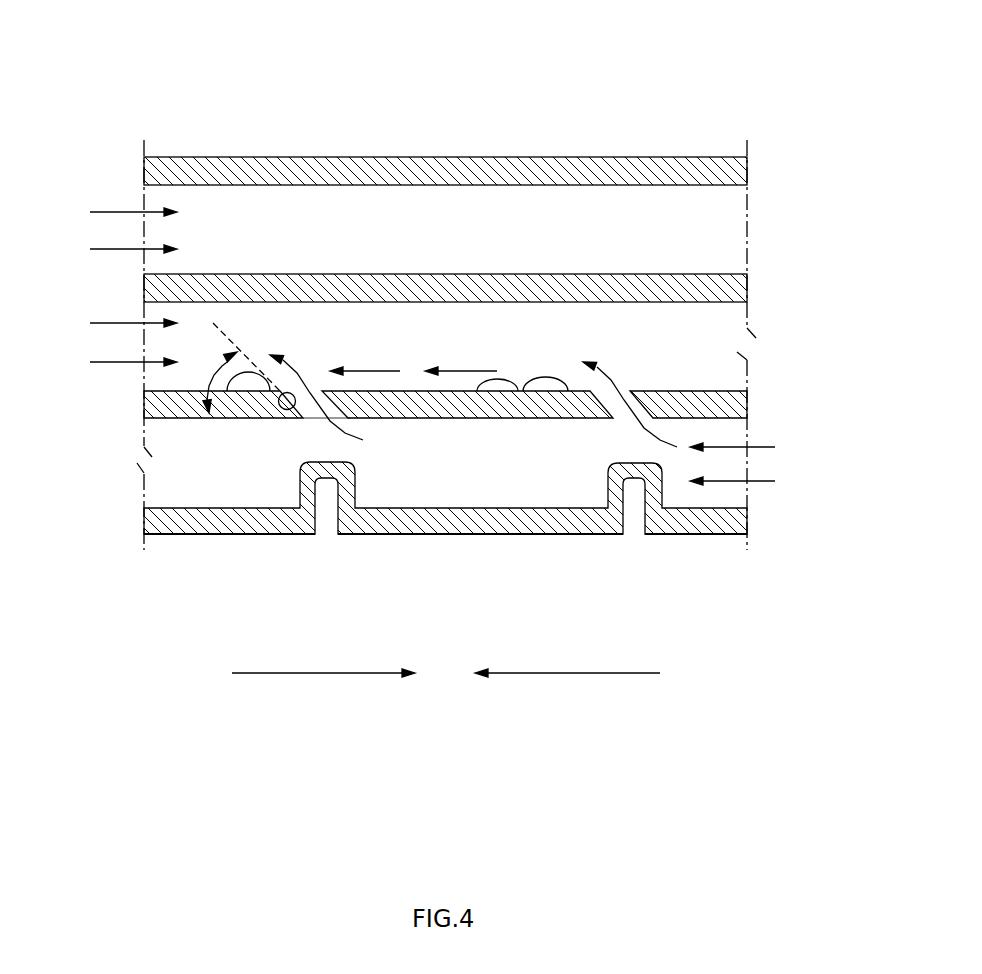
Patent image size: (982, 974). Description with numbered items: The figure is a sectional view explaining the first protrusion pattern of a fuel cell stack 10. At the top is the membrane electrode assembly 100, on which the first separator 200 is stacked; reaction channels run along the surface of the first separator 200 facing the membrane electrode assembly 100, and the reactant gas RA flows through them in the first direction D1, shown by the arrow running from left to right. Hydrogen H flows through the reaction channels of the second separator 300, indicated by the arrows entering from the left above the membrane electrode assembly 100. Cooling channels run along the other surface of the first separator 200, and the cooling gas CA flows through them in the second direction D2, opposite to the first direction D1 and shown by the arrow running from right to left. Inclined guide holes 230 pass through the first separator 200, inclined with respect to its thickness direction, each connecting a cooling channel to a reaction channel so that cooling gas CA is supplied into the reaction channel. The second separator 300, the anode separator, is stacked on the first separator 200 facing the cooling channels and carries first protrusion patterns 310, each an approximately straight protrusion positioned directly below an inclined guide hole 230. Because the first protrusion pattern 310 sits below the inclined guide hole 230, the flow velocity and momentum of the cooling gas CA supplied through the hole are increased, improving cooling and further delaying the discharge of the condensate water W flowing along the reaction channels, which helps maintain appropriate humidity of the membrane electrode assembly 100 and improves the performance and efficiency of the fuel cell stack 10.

The fuel cell stack 10 is at (188, 50).
The membrane electrode assembly 100 is at (692, 262).
The first separator 200 is at (729, 405).
The inclined guide hole 230 is at (282, 402).
The second separator 300 is at (732, 174).
The first protrusion pattern 310 is at (348, 481).
The condensate water W is at (547, 384).
The cooling gas CA is at (635, 563).
The hydrogen H is at (120, 230).
The reactant gas RA is at (114, 342).
The first direction D1 is at (318, 676).
The second direction D2 is at (573, 676).